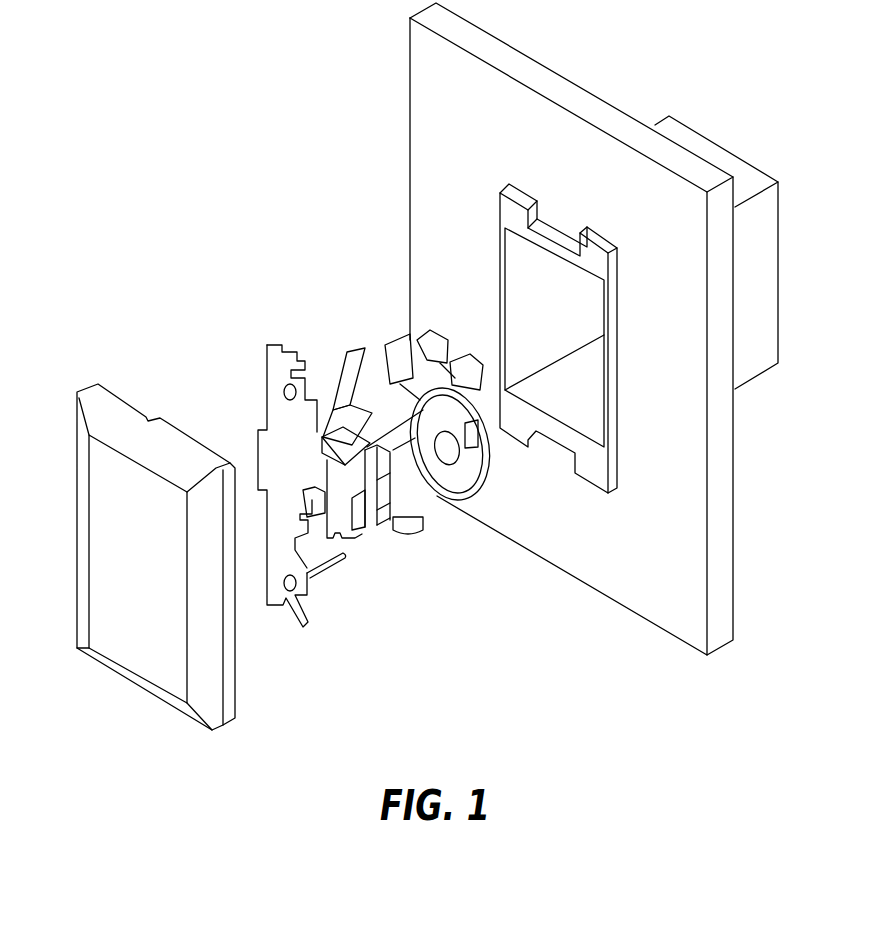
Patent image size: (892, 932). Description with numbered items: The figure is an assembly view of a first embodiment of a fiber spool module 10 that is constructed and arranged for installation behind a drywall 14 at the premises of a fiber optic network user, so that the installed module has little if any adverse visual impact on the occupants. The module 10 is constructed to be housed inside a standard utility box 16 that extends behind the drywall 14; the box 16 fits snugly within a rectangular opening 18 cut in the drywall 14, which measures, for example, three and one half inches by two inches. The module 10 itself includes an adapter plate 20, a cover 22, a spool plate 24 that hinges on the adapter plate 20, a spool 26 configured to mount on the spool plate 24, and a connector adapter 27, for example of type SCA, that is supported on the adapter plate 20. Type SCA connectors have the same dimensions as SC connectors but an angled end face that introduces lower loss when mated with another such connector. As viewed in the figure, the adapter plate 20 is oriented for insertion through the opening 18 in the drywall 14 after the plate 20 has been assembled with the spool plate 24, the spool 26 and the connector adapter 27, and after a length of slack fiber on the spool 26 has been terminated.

The fiber spool module 10 is at (302, 293).
The drywall 14 is at (530, 65).
The utility box 16 is at (717, 143).
The rectangular opening 18 is at (408, 202).
The adapter plate 20 is at (252, 387).
The cover 22 is at (88, 385).
The spool plate 24 is at (435, 490).
The spool 26 is at (390, 342).
The connector adapter 27 is at (329, 410).